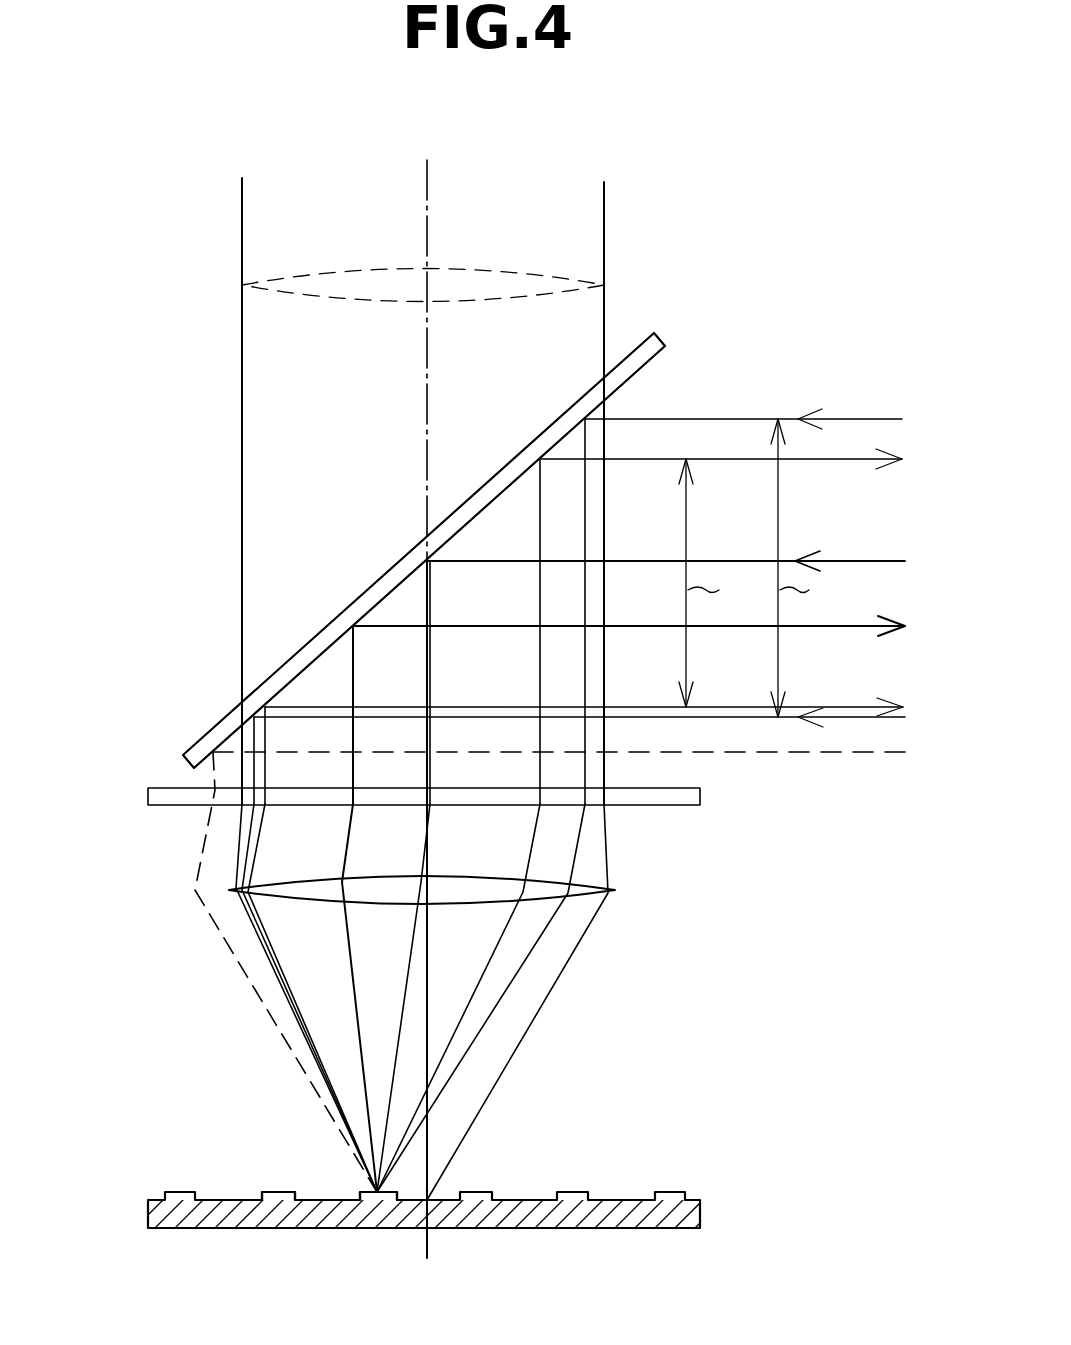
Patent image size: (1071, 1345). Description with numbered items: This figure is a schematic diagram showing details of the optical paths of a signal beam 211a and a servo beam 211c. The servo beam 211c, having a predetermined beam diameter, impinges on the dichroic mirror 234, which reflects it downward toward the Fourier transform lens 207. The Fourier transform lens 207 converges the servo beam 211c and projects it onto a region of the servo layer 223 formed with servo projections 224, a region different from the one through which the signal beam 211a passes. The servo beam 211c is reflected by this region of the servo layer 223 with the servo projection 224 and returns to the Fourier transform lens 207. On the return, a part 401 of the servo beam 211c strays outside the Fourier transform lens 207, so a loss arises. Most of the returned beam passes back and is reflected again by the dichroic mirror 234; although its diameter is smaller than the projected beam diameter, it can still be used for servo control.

The signal beam 211a is at (242, 409).
The servo beam 211c is at (742, 419).
The dichroic mirror 234 is at (656, 336).
The Fourier transform lens 207 is at (616, 896).
The part of the servo beam 401 is at (243, 950).
The servo layer 223 is at (152, 1212).
The servo projections 224 is at (362, 1192).